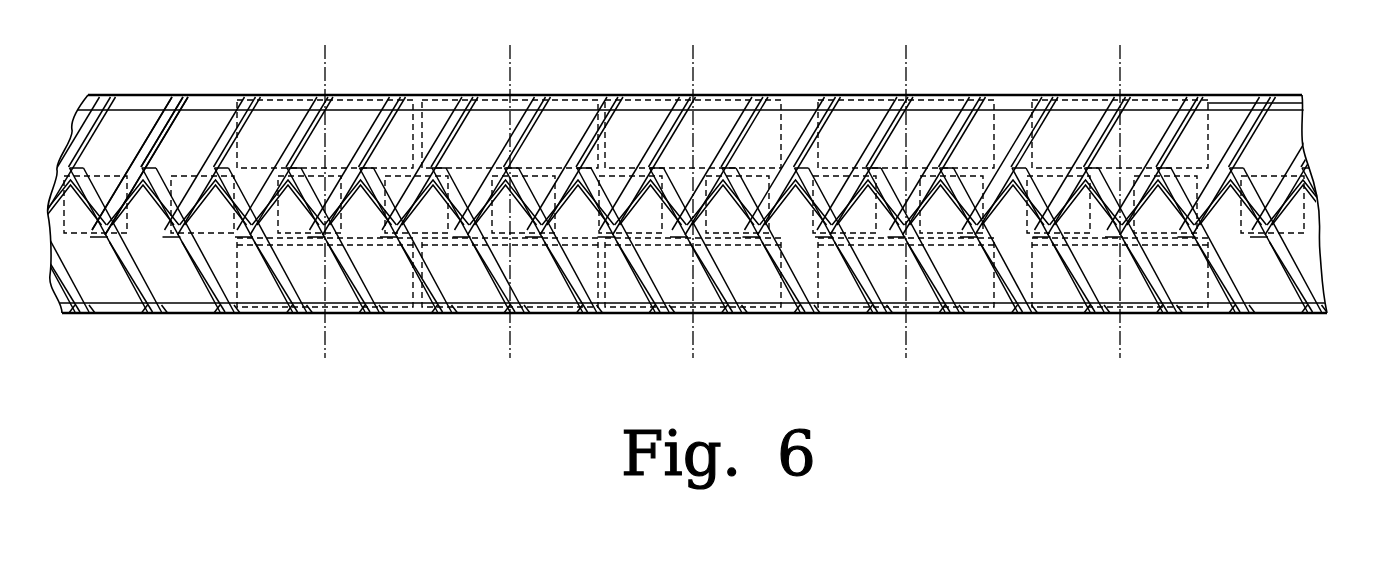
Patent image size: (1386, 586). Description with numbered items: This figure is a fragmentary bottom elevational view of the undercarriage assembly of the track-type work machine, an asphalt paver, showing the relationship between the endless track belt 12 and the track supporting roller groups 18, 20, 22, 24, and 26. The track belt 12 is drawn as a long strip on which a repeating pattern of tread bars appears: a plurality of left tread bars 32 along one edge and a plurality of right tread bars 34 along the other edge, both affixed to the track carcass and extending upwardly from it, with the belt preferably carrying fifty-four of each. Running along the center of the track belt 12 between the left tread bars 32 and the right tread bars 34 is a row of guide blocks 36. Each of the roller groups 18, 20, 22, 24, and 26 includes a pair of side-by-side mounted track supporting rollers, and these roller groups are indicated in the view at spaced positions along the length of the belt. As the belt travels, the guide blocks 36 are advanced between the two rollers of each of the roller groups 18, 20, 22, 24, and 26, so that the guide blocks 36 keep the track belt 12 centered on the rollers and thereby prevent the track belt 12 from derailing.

The endless track belt 12 is at (1253, 92).
The track supporting roller group 18 is at (1147, 66).
The track supporting roller group 20 is at (930, 70).
The track supporting roller group 22 is at (715, 70).
The track supporting roller group 24 is at (533, 70).
The track supporting roller group 26 is at (348, 70).
The left tread bar 32 is at (100, 283).
The right tread bar 34 is at (138, 123).
The guide block 36 is at (1316, 190).